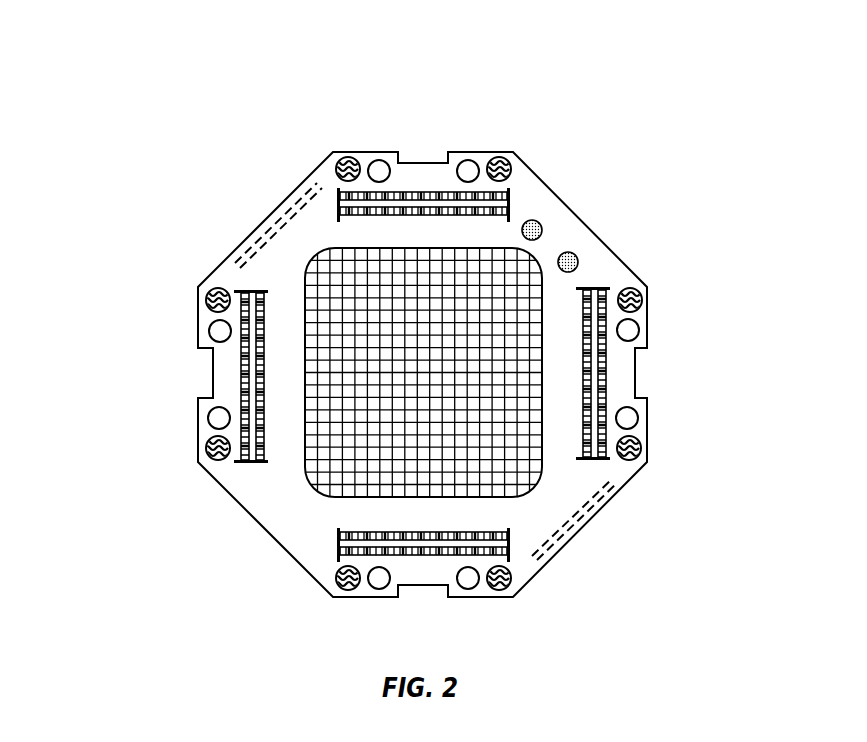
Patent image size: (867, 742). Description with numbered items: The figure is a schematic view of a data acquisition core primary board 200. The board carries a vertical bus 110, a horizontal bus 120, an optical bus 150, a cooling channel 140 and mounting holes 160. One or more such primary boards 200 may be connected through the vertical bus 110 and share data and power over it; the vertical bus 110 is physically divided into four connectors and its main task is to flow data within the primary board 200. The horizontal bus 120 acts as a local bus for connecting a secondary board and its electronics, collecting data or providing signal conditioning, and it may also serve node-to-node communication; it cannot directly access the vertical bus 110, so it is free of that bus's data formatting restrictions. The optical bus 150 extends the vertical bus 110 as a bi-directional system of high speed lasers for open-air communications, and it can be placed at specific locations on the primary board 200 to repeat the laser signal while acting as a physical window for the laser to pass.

The data acquisition core primary board 200 is at (192, 74).
The vertical bus 110 is at (604, 388).
The horizontal bus 120 is at (610, 502).
The cooling channel 140 is at (499, 156).
The optical bus 150 is at (568, 250).
The mounting holes 160 is at (638, 330).